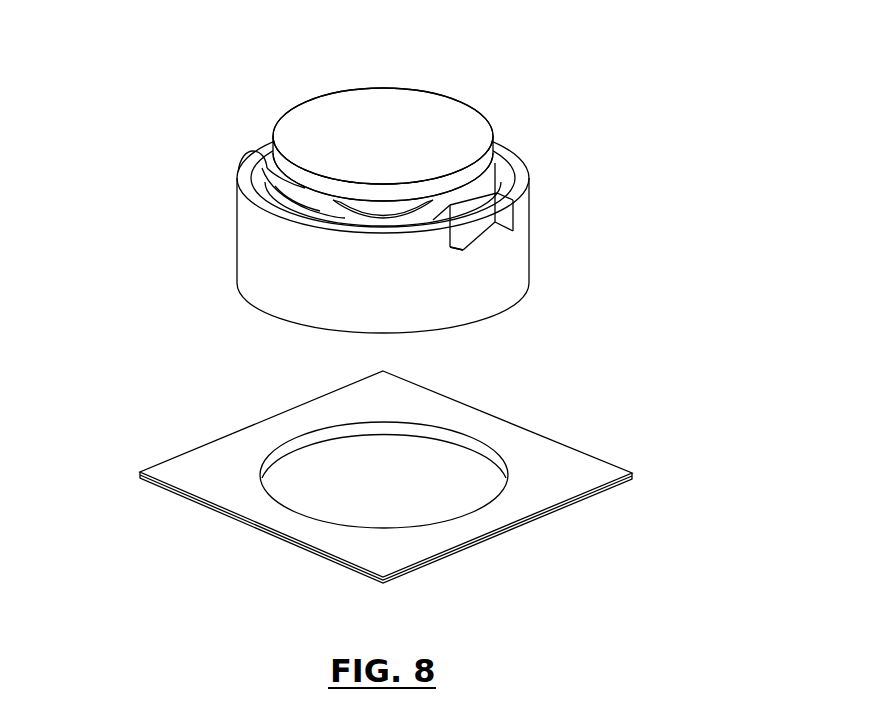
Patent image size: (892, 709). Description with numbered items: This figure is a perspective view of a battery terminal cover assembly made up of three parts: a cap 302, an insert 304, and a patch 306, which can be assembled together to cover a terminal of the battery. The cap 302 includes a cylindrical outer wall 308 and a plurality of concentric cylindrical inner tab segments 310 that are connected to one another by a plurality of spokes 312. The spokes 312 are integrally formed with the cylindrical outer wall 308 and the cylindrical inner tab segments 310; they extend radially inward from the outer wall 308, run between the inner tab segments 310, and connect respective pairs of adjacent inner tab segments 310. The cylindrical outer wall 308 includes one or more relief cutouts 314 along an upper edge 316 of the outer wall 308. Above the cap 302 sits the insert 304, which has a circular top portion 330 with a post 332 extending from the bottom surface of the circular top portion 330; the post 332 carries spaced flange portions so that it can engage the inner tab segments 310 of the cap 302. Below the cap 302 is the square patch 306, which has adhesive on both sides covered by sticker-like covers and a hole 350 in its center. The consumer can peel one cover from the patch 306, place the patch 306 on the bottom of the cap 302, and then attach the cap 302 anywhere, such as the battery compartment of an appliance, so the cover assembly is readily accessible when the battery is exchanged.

The cap 302 is at (414, 222).
The insert 304 is at (411, 110).
The patch 306 is at (356, 464).
The cylindrical outer wall 308 is at (457, 308).
The cylindrical inner tab segments 310 is at (317, 210).
The spokes 312 is at (290, 198).
The relief cutouts 314 is at (261, 147).
The upper edge 316 is at (253, 183).
The circular top portion 330 is at (302, 123).
The post 332 is at (380, 215).
The hole 350 is at (305, 427).